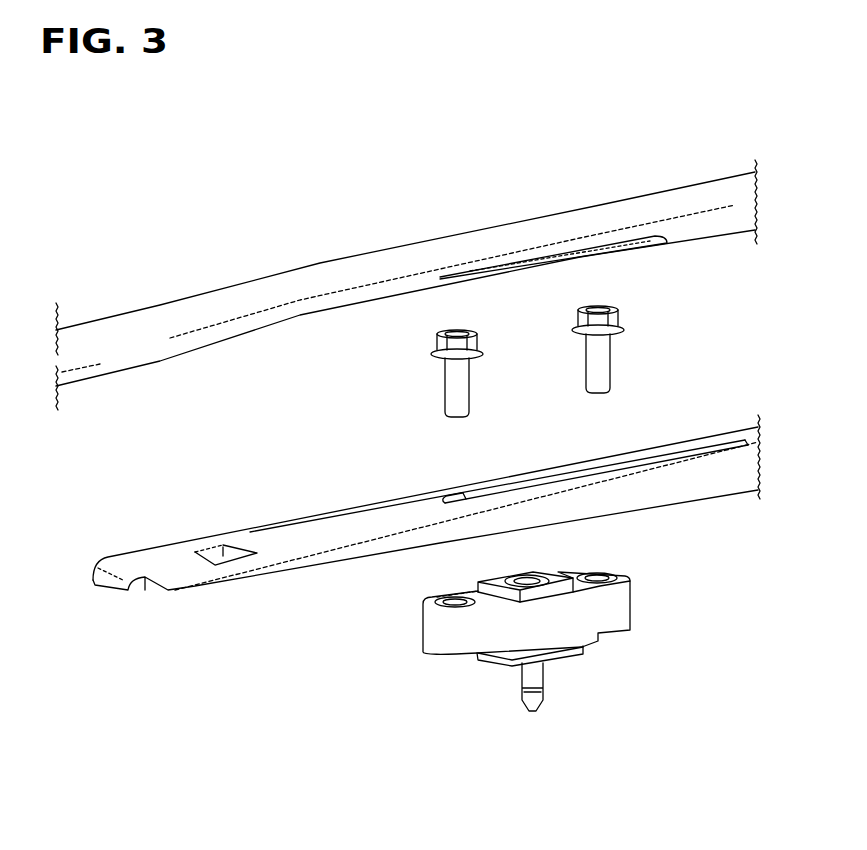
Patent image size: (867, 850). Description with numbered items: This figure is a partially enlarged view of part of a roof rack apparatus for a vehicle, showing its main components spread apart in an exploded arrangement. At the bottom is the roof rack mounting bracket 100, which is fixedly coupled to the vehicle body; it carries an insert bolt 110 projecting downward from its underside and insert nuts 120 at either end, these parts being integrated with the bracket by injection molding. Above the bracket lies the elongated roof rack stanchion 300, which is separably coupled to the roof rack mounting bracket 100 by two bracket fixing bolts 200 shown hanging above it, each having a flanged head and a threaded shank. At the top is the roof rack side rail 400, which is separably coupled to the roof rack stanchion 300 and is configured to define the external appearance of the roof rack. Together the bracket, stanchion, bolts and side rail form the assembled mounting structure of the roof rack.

The roof rack mounting bracket 100 is at (521, 673).
The insert bolt 110 is at (535, 700).
The insert nuts 120 is at (450, 596).
The bracket fixing bolts 200 is at (457, 332).
The roof rack stanchion 300 is at (313, 536).
The roof rack side rail 400 is at (278, 292).